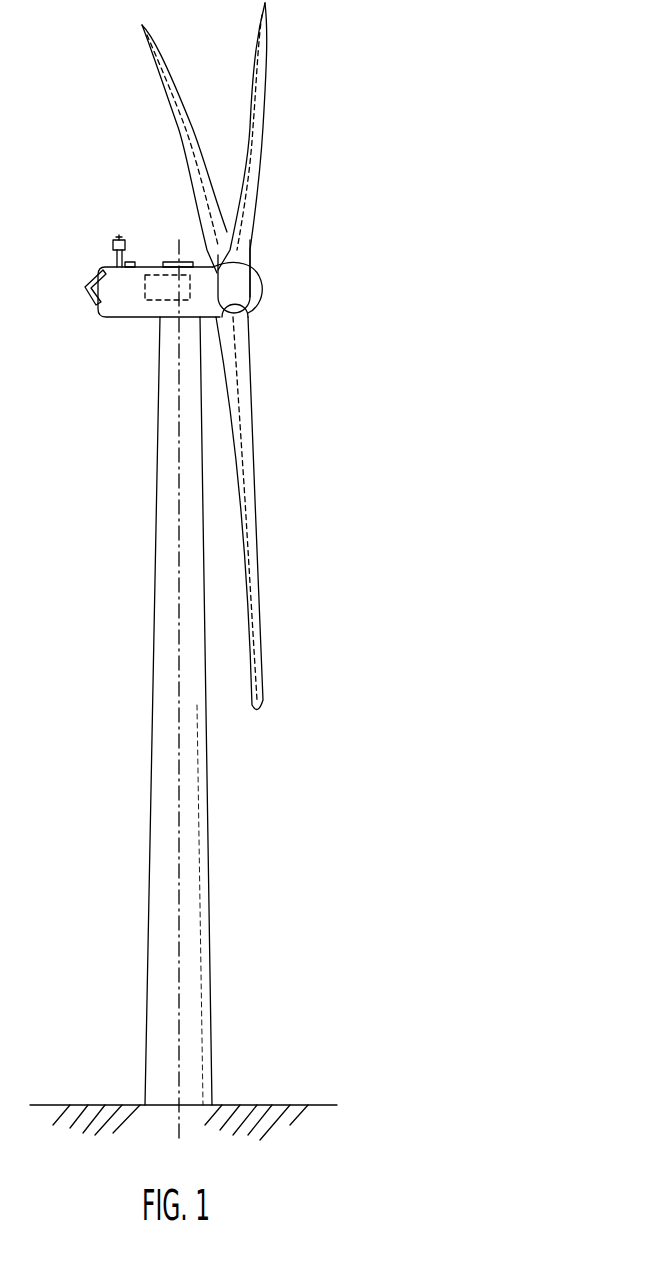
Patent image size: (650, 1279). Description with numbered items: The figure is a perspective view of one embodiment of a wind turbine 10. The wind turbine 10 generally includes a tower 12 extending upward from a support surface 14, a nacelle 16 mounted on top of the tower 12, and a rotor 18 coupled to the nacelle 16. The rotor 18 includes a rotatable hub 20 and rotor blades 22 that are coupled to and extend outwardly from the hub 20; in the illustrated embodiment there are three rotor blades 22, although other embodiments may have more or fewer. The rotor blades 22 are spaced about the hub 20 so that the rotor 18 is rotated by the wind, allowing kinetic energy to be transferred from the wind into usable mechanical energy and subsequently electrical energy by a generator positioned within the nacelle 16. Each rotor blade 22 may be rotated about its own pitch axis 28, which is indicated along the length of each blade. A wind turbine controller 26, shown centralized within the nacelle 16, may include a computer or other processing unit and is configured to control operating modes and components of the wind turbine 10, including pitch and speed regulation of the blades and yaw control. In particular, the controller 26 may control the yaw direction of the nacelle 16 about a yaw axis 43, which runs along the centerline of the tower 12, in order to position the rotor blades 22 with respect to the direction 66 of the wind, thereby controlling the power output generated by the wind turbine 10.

The wind turbine 10 is at (391, 74).
The tower 12 is at (165, 775).
The support surface 14 is at (102, 1105).
The nacelle 16 is at (125, 318).
The rotor 18 is at (271, 263).
The rotatable hub 20 is at (262, 292).
The rotor blade 22 is at (185, 132).
The wind turbine controller 26 is at (160, 265).
The pitch axis 28 is at (190, 188).
The yaw axis 43 is at (180, 417).
The direction of the wind 66 is at (392, 280).